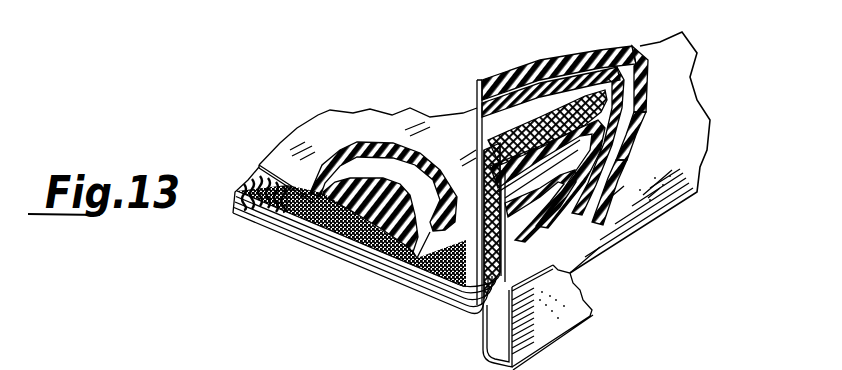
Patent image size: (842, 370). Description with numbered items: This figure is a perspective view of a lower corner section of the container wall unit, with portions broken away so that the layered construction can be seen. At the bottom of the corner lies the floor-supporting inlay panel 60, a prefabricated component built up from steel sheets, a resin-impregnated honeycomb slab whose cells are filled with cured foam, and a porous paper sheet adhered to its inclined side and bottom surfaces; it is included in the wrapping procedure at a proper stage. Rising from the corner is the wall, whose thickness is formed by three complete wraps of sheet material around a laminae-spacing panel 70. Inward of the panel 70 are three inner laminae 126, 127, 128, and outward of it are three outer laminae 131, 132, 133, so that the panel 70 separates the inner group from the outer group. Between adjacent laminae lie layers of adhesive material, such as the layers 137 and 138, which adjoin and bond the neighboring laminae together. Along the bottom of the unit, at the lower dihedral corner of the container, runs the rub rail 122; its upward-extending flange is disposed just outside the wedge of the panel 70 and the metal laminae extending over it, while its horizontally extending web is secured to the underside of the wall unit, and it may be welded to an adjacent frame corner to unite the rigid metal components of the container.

The floor-supporting inlay panel 60 is at (373, 257).
The laminae-spacing panel 70 is at (588, 92).
The rub rail 122 is at (567, 333).
The inner lamina 126 is at (478, 82).
The inner lamina 127 is at (503, 78).
The inner lamina 128 is at (538, 100).
The outer lamina 131 is at (680, 48).
The outer lamina 132 is at (655, 44).
The outer lamina 133 is at (620, 62).
The layer of adhesive material 137 is at (637, 124).
The layer of adhesive material 138 is at (630, 152).